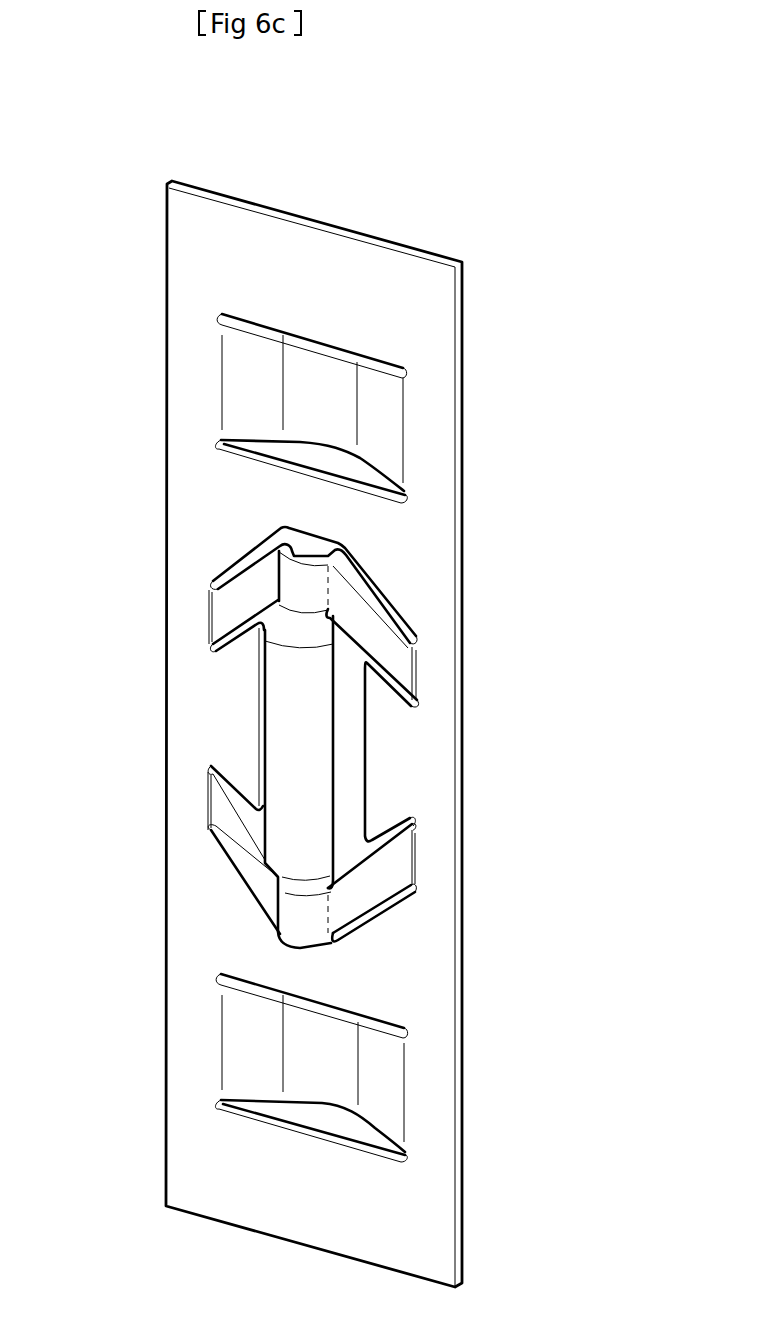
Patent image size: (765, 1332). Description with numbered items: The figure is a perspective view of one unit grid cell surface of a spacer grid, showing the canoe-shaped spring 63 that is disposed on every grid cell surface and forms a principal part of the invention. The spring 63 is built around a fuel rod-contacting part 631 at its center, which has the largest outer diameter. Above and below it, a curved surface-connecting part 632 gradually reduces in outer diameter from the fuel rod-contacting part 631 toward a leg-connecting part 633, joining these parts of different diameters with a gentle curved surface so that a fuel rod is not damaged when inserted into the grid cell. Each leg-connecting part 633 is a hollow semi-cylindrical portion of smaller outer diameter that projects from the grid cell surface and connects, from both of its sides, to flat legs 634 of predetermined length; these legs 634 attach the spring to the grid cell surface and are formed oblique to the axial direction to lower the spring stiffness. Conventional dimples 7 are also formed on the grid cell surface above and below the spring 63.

The dimples 7 is at (292, 388).
The canoe-shaped spring 63 is at (258, 714).
The fuel rod-contacting part 631 is at (308, 763).
The curved surface-connecting part 632 is at (285, 625).
The leg-connecting part 633 is at (290, 578).
The legs 634 is at (375, 632).